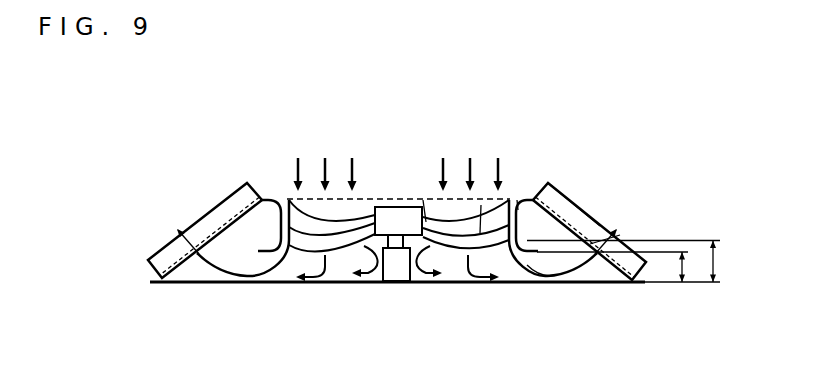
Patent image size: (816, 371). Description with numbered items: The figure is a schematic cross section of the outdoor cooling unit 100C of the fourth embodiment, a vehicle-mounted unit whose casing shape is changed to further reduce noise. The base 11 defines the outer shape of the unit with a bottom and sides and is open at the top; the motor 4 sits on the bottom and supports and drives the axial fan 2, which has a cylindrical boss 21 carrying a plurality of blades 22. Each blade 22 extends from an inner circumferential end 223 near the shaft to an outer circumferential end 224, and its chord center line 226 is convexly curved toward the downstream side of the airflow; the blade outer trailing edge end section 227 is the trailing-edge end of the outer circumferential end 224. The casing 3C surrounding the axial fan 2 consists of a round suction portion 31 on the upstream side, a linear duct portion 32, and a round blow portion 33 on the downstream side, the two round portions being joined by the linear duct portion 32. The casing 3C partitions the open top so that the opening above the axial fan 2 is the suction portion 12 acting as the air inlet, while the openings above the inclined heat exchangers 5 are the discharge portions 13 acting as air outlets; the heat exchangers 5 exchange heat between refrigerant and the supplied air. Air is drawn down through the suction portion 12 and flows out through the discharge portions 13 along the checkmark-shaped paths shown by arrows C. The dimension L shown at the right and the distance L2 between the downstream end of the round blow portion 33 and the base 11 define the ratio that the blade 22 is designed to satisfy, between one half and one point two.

The outdoor cooling unit 100C is at (597, 153).
The axial fan 2 is at (426, 231).
The boss 21 is at (398, 187).
The blade 22 is at (399, 195).
The inner circumferential end 223 is at (433, 176).
The outer circumferential end 224 is at (523, 174).
The chord center line 226 is at (493, 178).
The blade outer trailing edge end section 227 is at (545, 303).
The casing 3C is at (399, 195).
The round suction portion 31 is at (562, 170).
The linear duct portion 32 is at (599, 204).
The round blow portion 33 is at (629, 229).
The motor 4 is at (411, 275).
The heat exchanger 5 is at (397, 227).
The base 11 is at (435, 305).
The suction portion 12 is at (398, 161).
The discharge portion 13 is at (398, 259).
The arrows C is at (397, 283).
The height L is at (623, 262).
The distance L2 is at (612, 267).